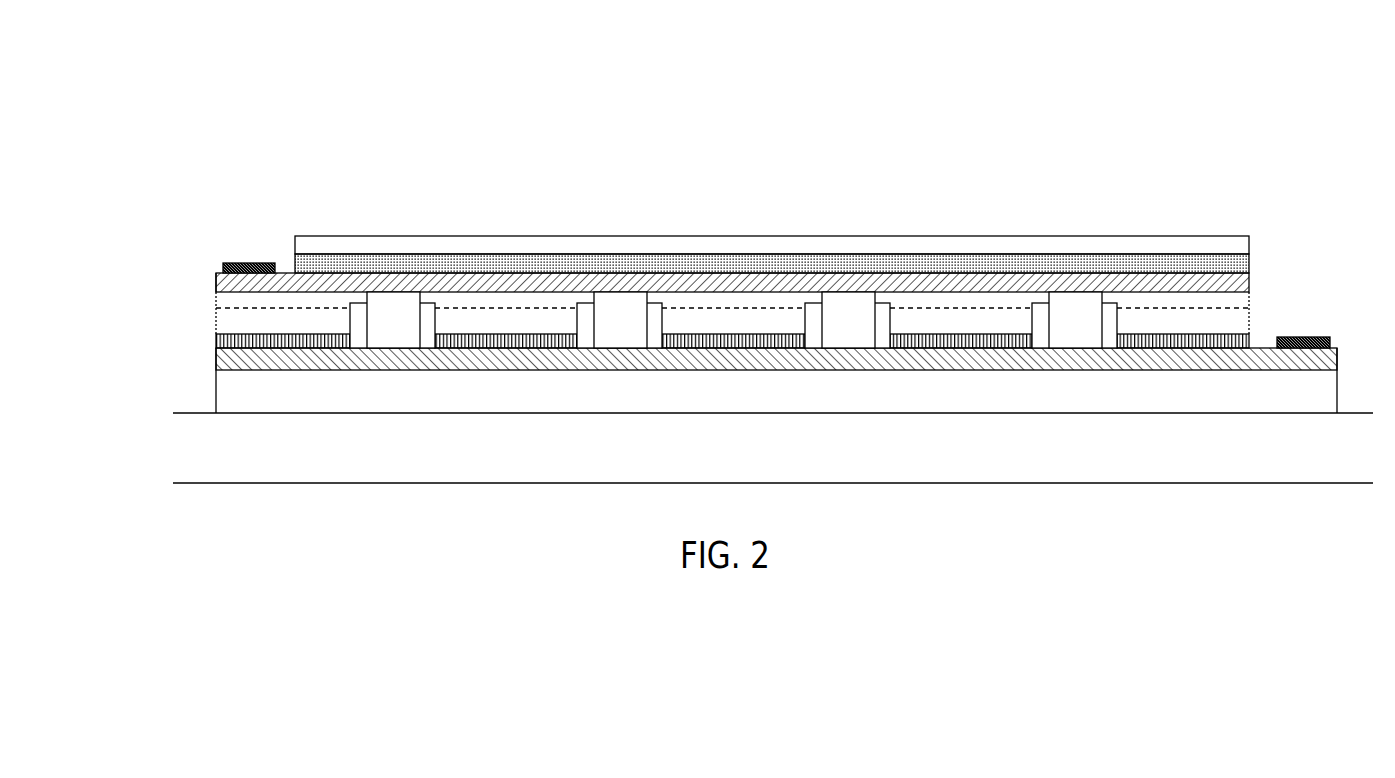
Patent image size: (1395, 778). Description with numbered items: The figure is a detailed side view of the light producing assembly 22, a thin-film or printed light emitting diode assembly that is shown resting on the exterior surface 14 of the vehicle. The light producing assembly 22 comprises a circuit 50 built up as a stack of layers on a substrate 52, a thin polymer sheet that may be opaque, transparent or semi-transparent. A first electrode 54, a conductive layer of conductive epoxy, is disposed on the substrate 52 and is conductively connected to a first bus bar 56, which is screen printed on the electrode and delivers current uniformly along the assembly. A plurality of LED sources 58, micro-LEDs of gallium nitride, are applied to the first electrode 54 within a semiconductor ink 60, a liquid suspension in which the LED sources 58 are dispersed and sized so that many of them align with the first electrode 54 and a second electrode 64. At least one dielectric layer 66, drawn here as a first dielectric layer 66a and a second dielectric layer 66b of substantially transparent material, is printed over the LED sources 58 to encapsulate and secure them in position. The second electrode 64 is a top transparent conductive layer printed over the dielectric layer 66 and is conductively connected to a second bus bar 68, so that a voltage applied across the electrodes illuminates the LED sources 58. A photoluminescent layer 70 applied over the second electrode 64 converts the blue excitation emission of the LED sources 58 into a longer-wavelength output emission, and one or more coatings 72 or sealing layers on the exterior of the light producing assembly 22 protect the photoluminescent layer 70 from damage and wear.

The exterior surface 14 is at (388, 413).
The light producing assembly 22 is at (931, 68).
The circuit 50 is at (744, 278).
The substrate 52 is at (218, 395).
The first electrode 54 is at (216, 358).
The first bus bar 56 is at (1313, 336).
The LED sources 58 is at (392, 298).
The semiconductor ink 60 is at (216, 340).
The second electrode 64 is at (215, 280).
The dielectric layer 66 is at (715, 296).
The first dielectric layer 66a is at (215, 323).
The second dielectric layer 66b is at (215, 302).
The second bus bar 68 is at (250, 262).
The photoluminescent layer 70 is at (1250, 262).
The coatings 72 is at (355, 240).